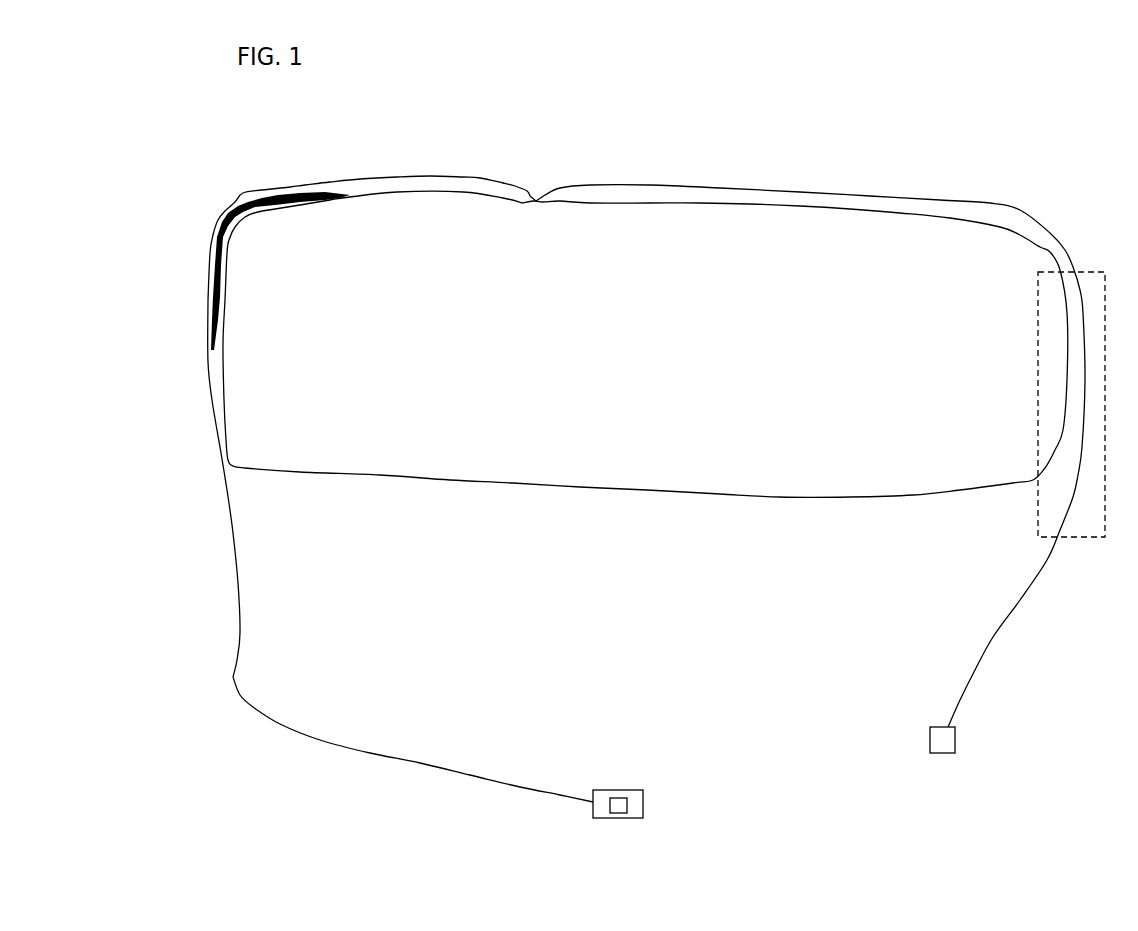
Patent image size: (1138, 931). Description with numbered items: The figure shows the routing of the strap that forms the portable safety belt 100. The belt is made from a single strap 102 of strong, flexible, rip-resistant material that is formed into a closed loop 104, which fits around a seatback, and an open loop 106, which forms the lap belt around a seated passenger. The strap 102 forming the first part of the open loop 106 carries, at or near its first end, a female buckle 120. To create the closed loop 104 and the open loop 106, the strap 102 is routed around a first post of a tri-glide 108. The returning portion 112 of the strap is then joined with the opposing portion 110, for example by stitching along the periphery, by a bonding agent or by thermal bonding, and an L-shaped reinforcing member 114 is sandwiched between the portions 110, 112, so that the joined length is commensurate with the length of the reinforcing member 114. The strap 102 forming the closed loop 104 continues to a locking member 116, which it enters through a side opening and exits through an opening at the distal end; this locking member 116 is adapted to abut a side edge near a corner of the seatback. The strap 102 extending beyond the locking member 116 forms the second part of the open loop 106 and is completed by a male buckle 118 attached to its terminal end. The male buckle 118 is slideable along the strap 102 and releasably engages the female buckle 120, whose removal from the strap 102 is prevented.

The portable safety belt 100 is at (667, 127).
The strap 102 is at (646, 451).
The closed loop 104 is at (645, 344).
The open loop 106 is at (433, 710).
The tri-glide 108 is at (521, 241).
The opposing portion of the strap 110 is at (147, 373).
The returning portion of the strap 112 is at (284, 271).
The L-shaped reinforcing member 114 is at (271, 256).
The locking member 116 is at (1017, 404).
The male buckle 118 is at (911, 779).
The female buckle 120 is at (659, 777).